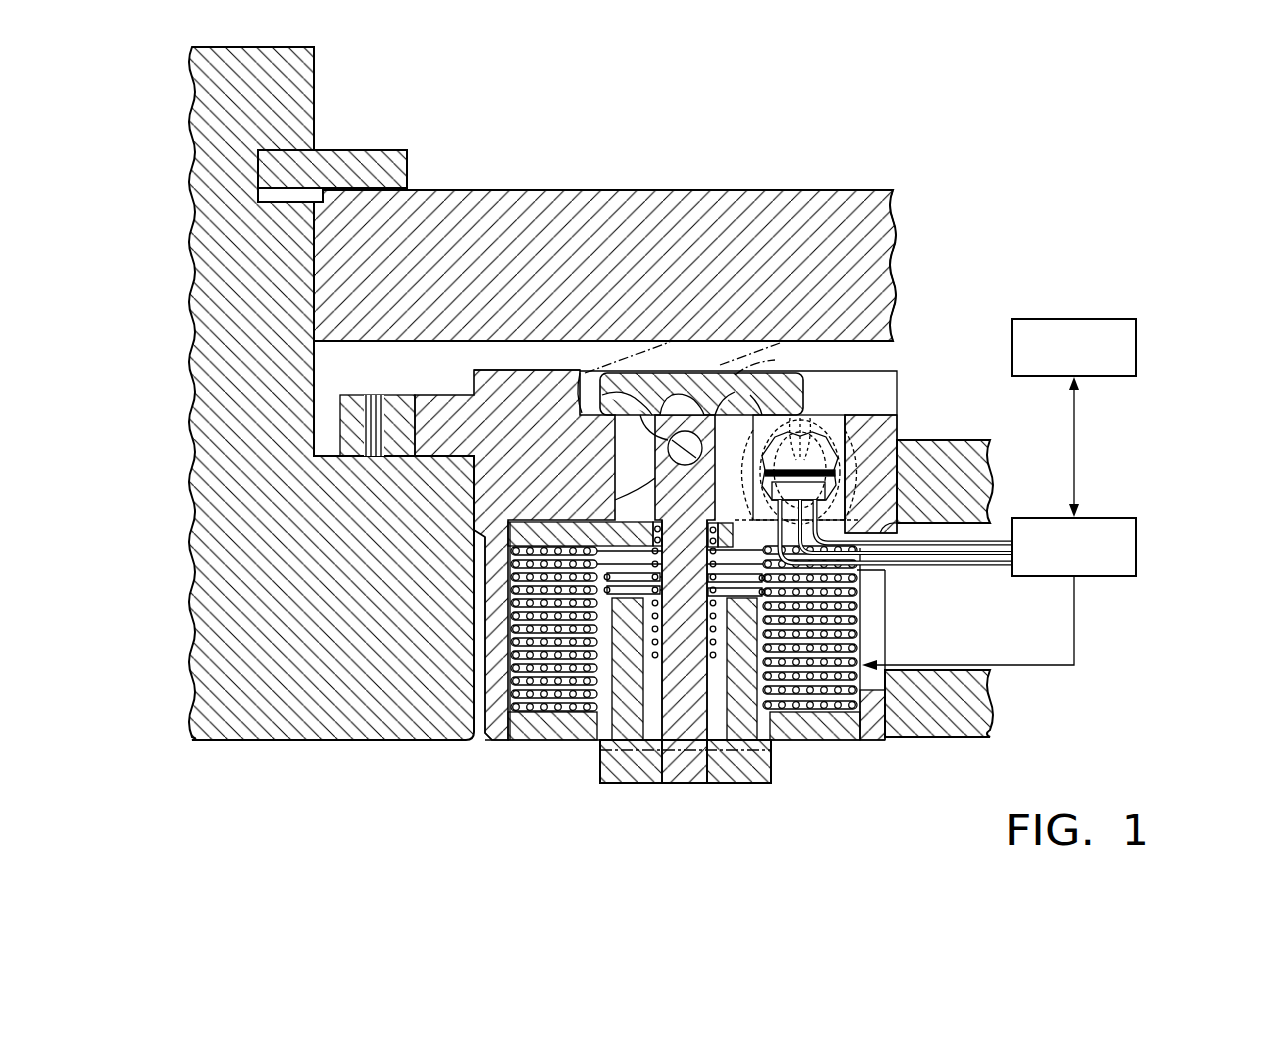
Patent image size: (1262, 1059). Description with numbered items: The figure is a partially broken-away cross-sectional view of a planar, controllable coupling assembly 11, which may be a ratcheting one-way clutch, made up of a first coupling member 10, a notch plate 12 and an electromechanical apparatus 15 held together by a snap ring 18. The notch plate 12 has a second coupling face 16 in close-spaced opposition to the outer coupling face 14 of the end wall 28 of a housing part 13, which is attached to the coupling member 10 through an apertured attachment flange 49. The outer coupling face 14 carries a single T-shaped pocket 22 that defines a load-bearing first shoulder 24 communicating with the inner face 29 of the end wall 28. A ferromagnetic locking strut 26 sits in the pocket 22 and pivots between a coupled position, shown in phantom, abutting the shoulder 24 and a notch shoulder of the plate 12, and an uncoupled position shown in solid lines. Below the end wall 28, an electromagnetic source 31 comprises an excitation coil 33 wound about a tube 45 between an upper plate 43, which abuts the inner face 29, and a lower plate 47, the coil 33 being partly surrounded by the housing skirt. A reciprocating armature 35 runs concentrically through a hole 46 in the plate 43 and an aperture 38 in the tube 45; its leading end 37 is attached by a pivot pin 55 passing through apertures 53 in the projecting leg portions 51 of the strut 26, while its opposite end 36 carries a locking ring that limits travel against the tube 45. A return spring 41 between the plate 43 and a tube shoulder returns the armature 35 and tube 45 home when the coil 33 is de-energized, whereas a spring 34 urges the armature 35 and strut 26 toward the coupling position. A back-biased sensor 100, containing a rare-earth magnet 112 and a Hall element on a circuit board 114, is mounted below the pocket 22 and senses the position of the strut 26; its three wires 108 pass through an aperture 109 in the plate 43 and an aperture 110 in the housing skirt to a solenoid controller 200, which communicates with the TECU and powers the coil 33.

The first coupling member 10 is at (365, 755).
The coupling assembly 11 is at (258, 763).
The notch plate 12 is at (612, 180).
The housing part 13 is at (510, 355).
The outer coupling face 14 is at (578, 366).
The electromechanical apparatus 15 is at (495, 757).
The second coupling face 16 is at (878, 340).
The snap ring 18 is at (352, 150).
The pocket 22 is at (850, 380).
The first shoulder 24 is at (587, 380).
The locking strut 26 is at (705, 355).
The end wall 28 is at (478, 443).
The inner face 29 is at (555, 522).
The electromagnetic source 31 is at (537, 722).
The excitation coil 33 is at (513, 700).
The spring 34 is at (653, 640).
The armature 35 is at (693, 797).
The opposite end 36 is at (678, 770).
The leading end 37 is at (656, 442).
The aperture 38 is at (690, 737).
The return spring 41 is at (607, 672).
The plate 43 is at (476, 532).
The tube 45 is at (785, 785).
The hole 46 is at (672, 530).
The plate 47 is at (818, 745).
The attachment flange 49 is at (350, 395).
The leg portion 51 is at (645, 440).
The aperture 53 is at (700, 395).
The pivot pin 55 is at (684, 440).
The sensor 100 is at (900, 460).
The wires 108 is at (993, 567).
The aperture 109 is at (735, 532).
The aperture 110 is at (897, 530).
The rare-earth magnet 112 is at (852, 472).
The circuit board 114 is at (898, 405).
The solenoid controller 200 is at (1108, 508).